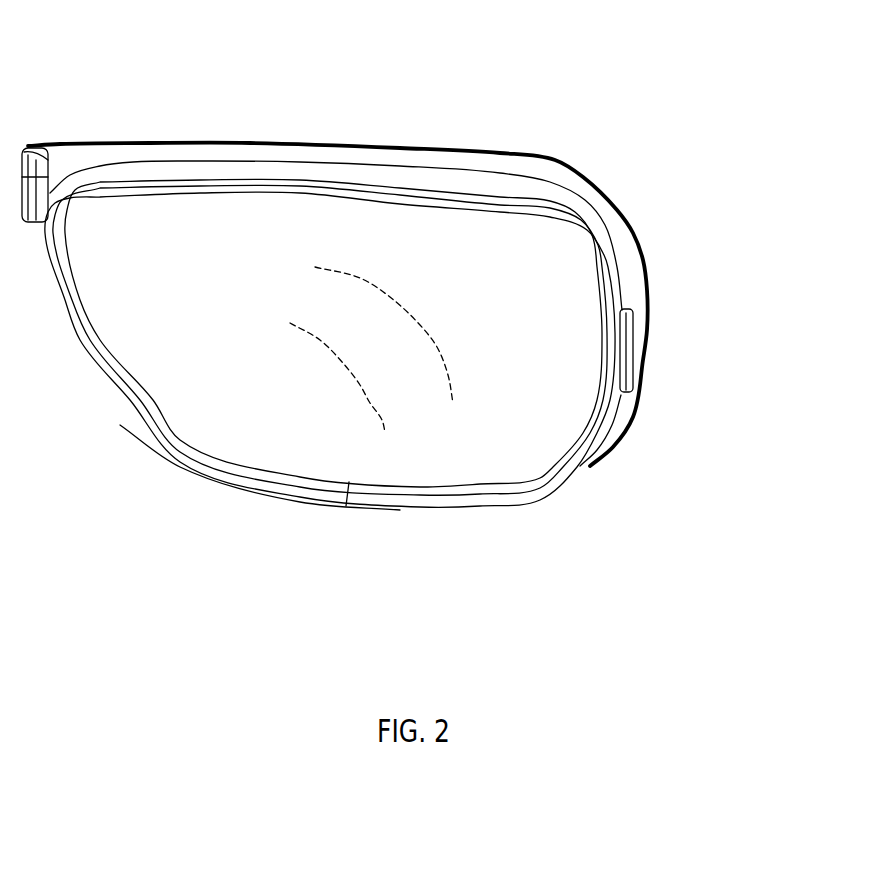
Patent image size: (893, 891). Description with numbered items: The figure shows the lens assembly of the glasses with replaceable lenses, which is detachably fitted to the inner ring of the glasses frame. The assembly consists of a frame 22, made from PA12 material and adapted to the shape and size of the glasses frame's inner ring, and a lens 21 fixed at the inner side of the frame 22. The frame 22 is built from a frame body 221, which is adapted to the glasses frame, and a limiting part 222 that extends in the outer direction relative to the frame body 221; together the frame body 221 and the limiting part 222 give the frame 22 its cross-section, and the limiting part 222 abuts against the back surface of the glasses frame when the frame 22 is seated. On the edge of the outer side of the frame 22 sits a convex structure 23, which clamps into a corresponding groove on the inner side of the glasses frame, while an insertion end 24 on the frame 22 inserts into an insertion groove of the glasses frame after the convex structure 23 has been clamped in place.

The lens 21 is at (230, 597).
The frame 22 is at (397, 253).
The frame body 221 is at (283, 46).
The limiting part 222 is at (412, 96).
The convex structure 23 is at (720, 468).
The insertion end 24 is at (68, 52).